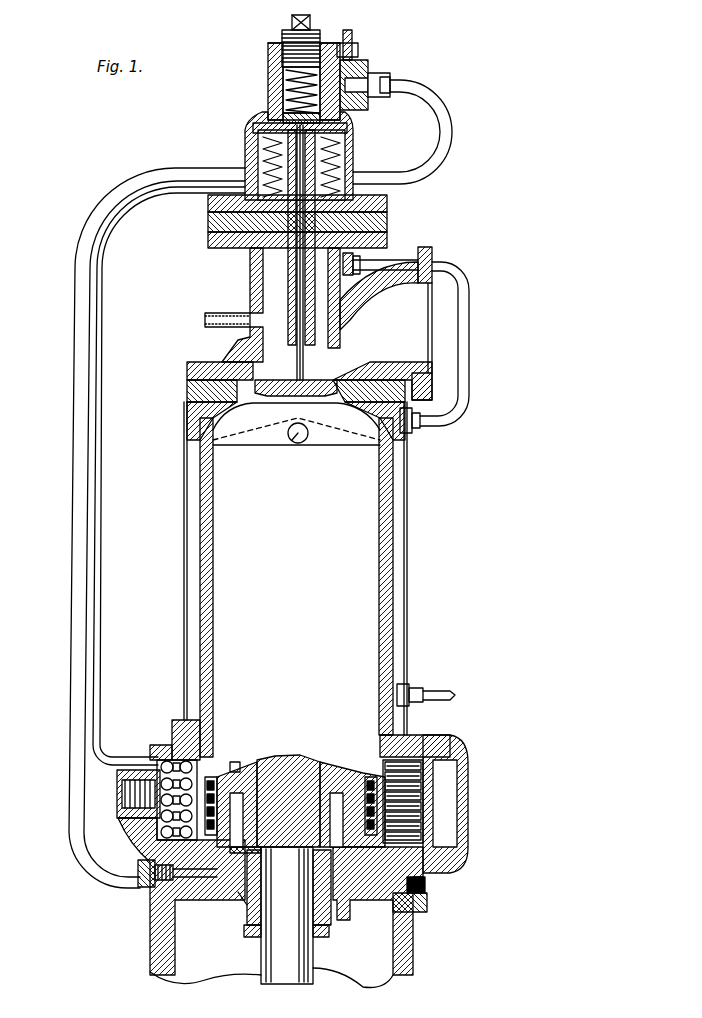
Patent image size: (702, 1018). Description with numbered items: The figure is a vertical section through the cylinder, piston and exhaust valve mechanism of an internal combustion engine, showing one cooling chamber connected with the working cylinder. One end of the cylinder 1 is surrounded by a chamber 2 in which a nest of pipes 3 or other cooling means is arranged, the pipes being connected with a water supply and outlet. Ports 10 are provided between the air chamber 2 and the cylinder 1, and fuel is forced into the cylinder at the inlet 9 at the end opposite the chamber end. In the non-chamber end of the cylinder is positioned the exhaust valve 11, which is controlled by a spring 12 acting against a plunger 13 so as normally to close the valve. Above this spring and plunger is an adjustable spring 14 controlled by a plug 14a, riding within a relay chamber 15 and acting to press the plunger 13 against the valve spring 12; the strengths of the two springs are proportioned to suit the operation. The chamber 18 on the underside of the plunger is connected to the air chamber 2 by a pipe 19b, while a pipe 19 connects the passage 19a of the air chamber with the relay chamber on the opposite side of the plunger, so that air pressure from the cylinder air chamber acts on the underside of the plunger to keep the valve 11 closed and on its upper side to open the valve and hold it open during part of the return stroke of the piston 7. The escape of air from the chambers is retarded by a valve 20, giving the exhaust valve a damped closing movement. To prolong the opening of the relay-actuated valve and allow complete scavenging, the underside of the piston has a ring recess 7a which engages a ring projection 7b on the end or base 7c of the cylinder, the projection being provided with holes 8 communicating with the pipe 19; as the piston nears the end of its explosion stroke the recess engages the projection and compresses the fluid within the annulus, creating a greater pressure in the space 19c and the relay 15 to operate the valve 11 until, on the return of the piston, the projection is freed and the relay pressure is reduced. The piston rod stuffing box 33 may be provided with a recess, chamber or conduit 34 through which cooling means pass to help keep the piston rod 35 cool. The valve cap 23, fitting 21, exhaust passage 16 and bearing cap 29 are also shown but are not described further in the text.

The cylinder 1 is at (203, 637).
The chamber 2 is at (157, 833).
The nest of pipes 3 is at (167, 787).
The piston 7 is at (298, 758).
The ring recess 7a is at (342, 767).
The ring projection 7b is at (270, 762).
The end or base of the cylinder 7c is at (417, 903).
The holes 8 is at (237, 770).
The inlet 9 is at (292, 440).
The ports 10 is at (210, 775).
The exhaust valve 11 is at (210, 413).
The spring 12 is at (210, 205).
The plunger 13 is at (245, 133).
The adjustable spring 14 is at (282, 105).
The plug 14a is at (311, 40).
The relay chamber 15 is at (283, 79).
The exhaust passage 16 is at (386, 323).
The chamber 18 is at (262, 157).
The pipe 19 is at (440, 122).
The passage 19a is at (160, 882).
The pipe 19b is at (125, 212).
The space 19c is at (238, 900).
The valve 20 is at (353, 40).
The pipe fitting 21 is at (368, 80).
The valve cap 23 is at (268, 52).
The bearing cap 29 is at (122, 802).
The piston rod stuffing box 33 is at (243, 898).
The recess, chamber or conduit 34 is at (238, 862).
The piston rod 35 is at (297, 958).